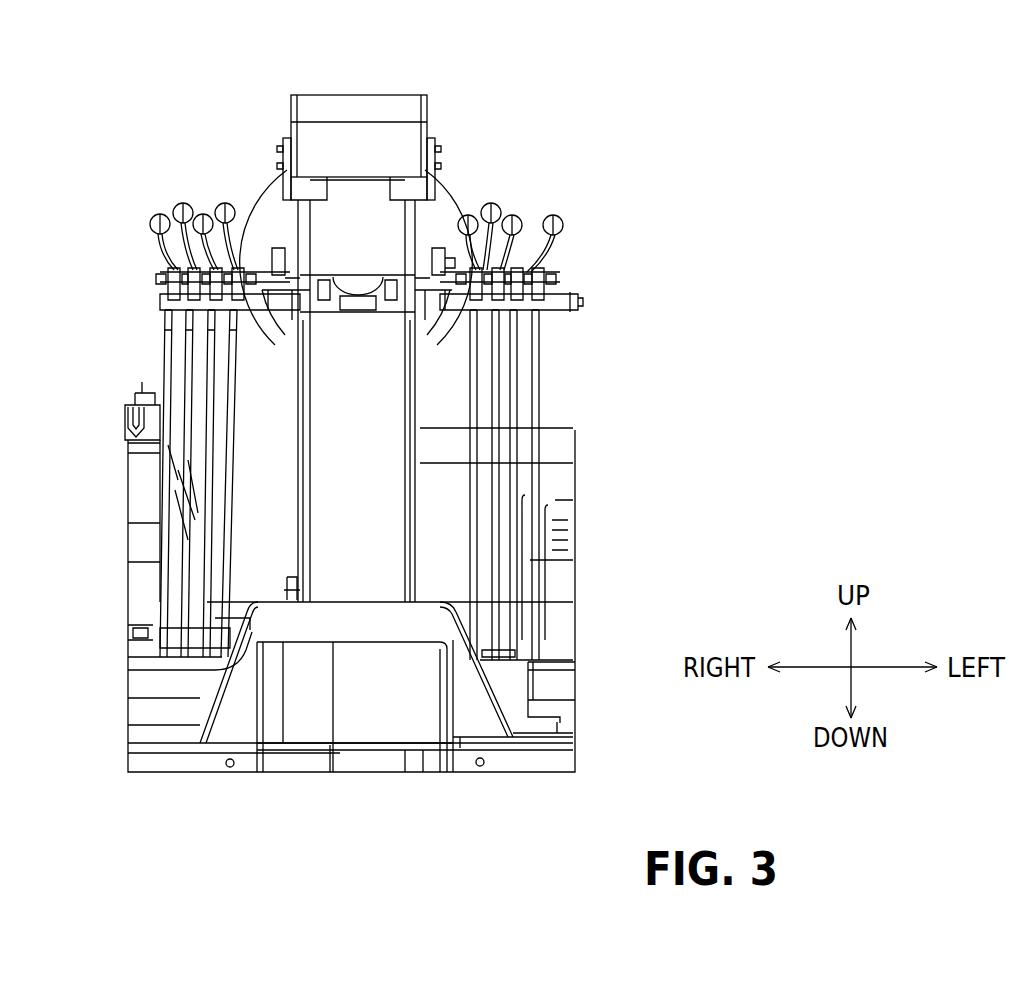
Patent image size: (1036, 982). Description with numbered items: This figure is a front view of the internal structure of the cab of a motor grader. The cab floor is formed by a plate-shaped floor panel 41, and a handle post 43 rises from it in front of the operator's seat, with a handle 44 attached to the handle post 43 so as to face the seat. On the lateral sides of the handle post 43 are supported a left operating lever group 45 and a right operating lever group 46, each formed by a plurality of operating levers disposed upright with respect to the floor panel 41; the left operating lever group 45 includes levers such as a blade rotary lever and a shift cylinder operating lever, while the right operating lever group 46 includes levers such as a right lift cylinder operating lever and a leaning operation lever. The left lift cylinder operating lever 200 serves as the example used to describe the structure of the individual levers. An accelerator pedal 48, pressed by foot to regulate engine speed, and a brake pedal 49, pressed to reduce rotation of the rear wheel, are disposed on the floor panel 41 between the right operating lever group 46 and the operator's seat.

The floor panel 41 is at (165, 742).
The handle post 43 is at (376, 104).
The handle 44 is at (447, 200).
The left operating lever group 45 is at (512, 204).
The right operating lever group 46 is at (195, 197).
The accelerator pedal 48 is at (145, 625).
The brake pedal 49 is at (205, 590).
The left lift cylinder operating lever 200 is at (540, 398).